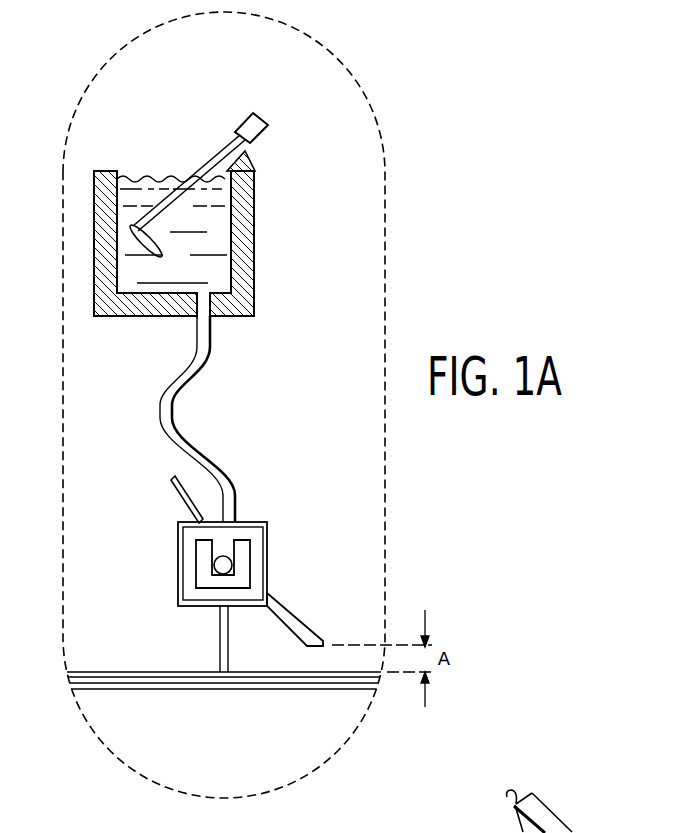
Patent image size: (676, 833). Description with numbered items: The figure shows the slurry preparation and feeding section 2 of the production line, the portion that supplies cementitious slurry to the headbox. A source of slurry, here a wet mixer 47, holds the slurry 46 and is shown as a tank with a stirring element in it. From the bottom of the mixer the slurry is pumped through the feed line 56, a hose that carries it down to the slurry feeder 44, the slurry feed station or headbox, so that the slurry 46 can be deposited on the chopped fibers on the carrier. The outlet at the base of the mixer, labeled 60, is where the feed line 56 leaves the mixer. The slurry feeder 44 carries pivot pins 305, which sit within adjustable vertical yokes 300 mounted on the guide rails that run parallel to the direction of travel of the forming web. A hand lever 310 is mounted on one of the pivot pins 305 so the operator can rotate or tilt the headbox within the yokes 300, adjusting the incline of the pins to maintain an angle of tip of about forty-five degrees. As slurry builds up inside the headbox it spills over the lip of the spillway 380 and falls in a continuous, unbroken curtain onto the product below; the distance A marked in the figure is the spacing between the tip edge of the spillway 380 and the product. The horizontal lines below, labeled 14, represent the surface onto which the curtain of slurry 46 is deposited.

The slurry preparation and feeding section 2 is at (335, 57).
The wet mixer 47 is at (94, 209).
The slurry 46 is at (212, 233).
The tank outlet 60 is at (197, 305).
The feed line 56 is at (197, 358).
The hand lever 310 is at (172, 478).
The slurry feeder 44 is at (262, 522).
The adjustable vertical yokes 300 is at (198, 558).
The pivot pins 305 is at (231, 562).
The spillway 380 is at (307, 628).
The base plate / floor 14 is at (330, 689).